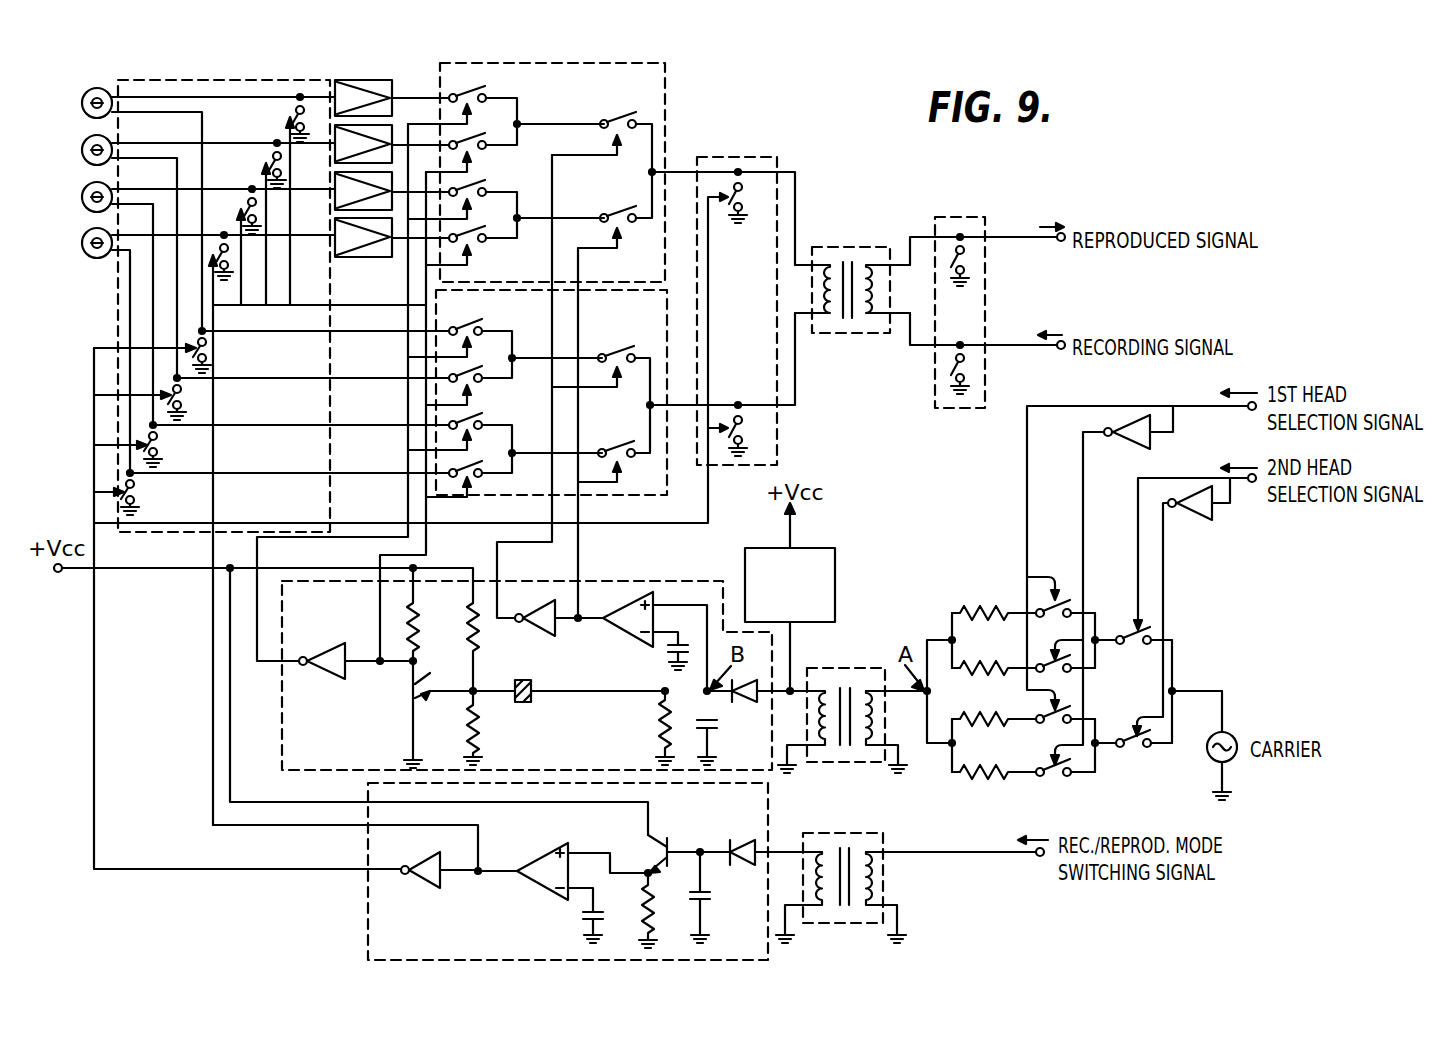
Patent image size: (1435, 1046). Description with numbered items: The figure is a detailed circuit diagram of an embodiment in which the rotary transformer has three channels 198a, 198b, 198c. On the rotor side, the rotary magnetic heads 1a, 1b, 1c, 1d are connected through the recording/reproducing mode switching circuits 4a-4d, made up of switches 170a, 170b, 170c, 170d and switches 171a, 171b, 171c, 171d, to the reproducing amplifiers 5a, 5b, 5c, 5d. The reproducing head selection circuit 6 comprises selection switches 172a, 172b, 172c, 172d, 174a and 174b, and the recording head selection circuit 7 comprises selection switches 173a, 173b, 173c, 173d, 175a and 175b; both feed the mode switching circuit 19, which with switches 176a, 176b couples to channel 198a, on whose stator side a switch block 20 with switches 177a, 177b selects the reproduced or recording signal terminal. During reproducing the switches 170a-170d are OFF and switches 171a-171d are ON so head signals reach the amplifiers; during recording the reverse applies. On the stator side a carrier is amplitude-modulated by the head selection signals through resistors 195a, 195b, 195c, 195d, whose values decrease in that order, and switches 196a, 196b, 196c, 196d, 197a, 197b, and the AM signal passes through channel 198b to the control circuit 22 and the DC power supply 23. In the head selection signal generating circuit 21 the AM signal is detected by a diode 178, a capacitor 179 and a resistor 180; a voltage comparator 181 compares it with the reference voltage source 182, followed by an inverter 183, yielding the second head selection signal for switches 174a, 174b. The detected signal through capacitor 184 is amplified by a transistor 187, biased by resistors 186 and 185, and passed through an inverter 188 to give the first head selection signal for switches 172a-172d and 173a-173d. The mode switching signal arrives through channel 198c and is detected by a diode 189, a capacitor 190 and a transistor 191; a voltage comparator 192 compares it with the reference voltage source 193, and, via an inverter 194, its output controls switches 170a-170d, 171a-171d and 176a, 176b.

The rotary magnetic head 1a is at (90, 90).
The rotary magnetic head 1b is at (86, 138).
The rotary magnetic head 1c is at (84, 190).
The rotary magnetic head 1d is at (85, 238).
The recording/reproducing mode switching circuits 4a-4d is at (222, 80).
The reproducing amplifier 5a is at (370, 80).
The reproducing amplifier 5b is at (335, 150).
The reproducing amplifier 5c is at (335, 197).
The reproducing amplifier 5d is at (360, 258).
The reproducing head selection circuit 6 is at (558, 63).
The recording head selection circuit 7 is at (663, 300).
The recording/reproducing mode switching circuit 19 is at (736, 157).
The signal switch circuit 20 is at (955, 217).
The head selection signal generating circuit 21 is at (768, 832).
The second control circuit 22 is at (668, 581).
The DC power supply 23 is at (835, 571).
The switch 170a is at (288, 110).
The switch 170b is at (265, 156).
The switch 170c is at (256, 206).
The switch 170d is at (228, 252).
The switch 171a is at (210, 352).
The switch 171b is at (185, 397).
The switch 171c is at (158, 445).
The switch 171d is at (136, 492).
The selection switch 172a is at (466, 92).
The selection switch 172b is at (471, 143).
The selection switch 172c is at (466, 186).
The selection switch 172d is at (471, 237).
The selection switch 173a is at (485, 324).
The selection switch 173b is at (470, 380).
The selection switch 173c is at (485, 418).
The selection switch 173d is at (462, 472).
The selection switch 174a is at (620, 116).
The selection switch 174b is at (620, 210).
The selection switch 175a is at (618, 350).
The selection switch 175b is at (615, 445).
The switch 176a is at (748, 212).
The switch 176b is at (745, 432).
The switch 177a is at (965, 262).
The switch 177b is at (965, 370).
The diode 178 is at (748, 705).
The capacitor 179 is at (712, 735).
The resistor 180 is at (656, 724).
The voltage comparator 181 is at (636, 606).
The reference voltage source 182 is at (668, 655).
The inverter 183 is at (548, 606).
The capacitor 184 is at (525, 680).
The resistor 185 is at (478, 720).
The resistor 186 is at (464, 645).
The transistor 187 is at (410, 691).
The inverter 188 is at (310, 650).
The diode 189 is at (740, 841).
The capacitor 190 is at (708, 896).
The transistor 191 is at (652, 842).
The voltage comparator 192 is at (527, 862).
The reference voltage source 193 is at (606, 912).
The inverter 194 is at (432, 886).
The resistor 195a is at (968, 606).
The resistor 195b is at (992, 661).
The resistor 195c is at (996, 712).
The resistor 195d is at (1006, 750).
The switch 196a is at (1056, 588).
The switch 196b is at (1072, 660).
The switch 196c is at (1073, 708).
The switch 196d is at (1050, 780).
The selection switch 197a is at (1140, 632).
The selection switch 197b is at (1134, 750).
The rotary transformer channel 198a is at (828, 247).
The rotary transformer channel 198b is at (838, 668).
The rotary transformer channel 198c is at (836, 833).